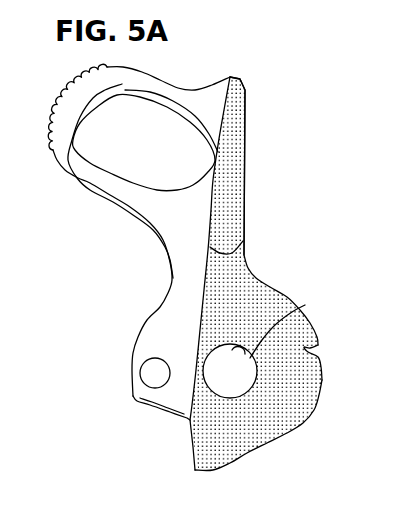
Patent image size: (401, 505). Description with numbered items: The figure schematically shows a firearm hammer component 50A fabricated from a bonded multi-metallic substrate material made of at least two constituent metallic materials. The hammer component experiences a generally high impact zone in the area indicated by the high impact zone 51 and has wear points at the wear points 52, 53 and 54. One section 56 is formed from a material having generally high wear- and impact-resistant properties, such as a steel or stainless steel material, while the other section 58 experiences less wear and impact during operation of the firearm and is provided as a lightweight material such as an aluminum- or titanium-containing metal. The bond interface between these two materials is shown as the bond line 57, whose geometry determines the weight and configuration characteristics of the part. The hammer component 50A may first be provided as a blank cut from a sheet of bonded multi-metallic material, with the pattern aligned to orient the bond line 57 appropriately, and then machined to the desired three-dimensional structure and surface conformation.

The hammer component 50A is at (270, 98).
The high impact zone 51 is at (242, 93).
The wear point 52 is at (322, 367).
The wear point 53 is at (310, 427).
The wear point 54 is at (303, 308).
The section 56 is at (250, 330).
The bond line 57 is at (243, 240).
The section 58 is at (195, 233).